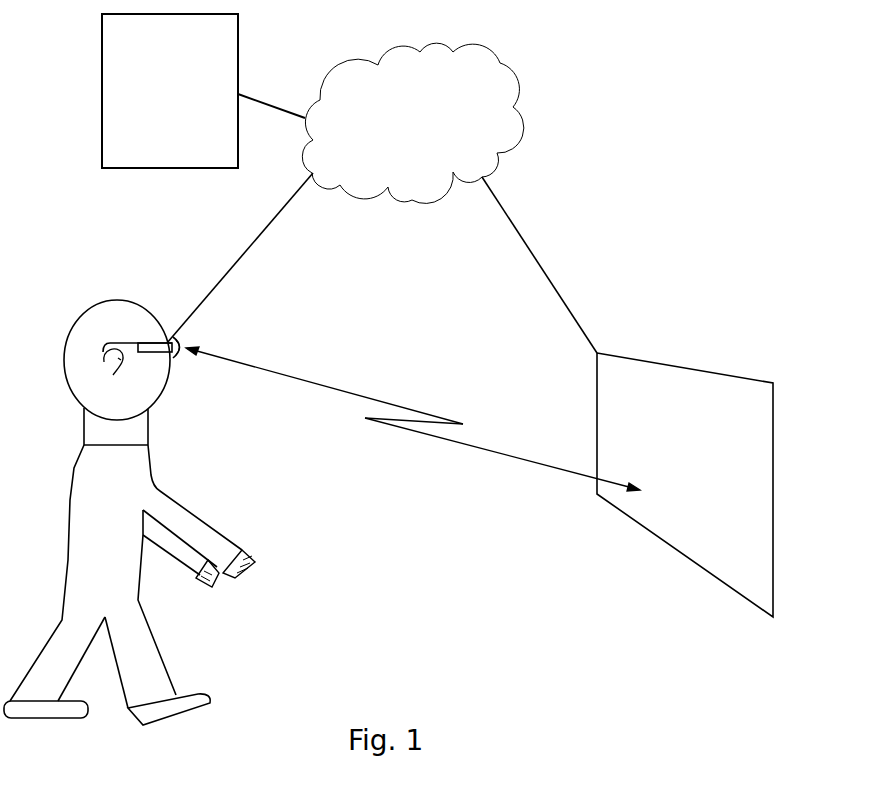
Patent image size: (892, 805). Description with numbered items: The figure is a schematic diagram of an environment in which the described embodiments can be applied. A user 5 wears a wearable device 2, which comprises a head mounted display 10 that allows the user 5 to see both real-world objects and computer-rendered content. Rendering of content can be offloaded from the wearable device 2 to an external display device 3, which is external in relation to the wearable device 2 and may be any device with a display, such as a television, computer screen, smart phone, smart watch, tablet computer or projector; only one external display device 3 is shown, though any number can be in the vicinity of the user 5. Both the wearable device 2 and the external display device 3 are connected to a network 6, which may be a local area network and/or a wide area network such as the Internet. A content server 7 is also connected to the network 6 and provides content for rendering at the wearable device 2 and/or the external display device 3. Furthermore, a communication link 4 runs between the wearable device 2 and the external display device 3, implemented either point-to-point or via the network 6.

The wearable device 2 is at (174, 343).
The external display device 3 is at (667, 360).
The communication link 4 is at (353, 393).
The user 5 is at (121, 300).
The network 6 is at (393, 128).
The content server 7 is at (162, 76).
The head mounted display 10 is at (180, 353).